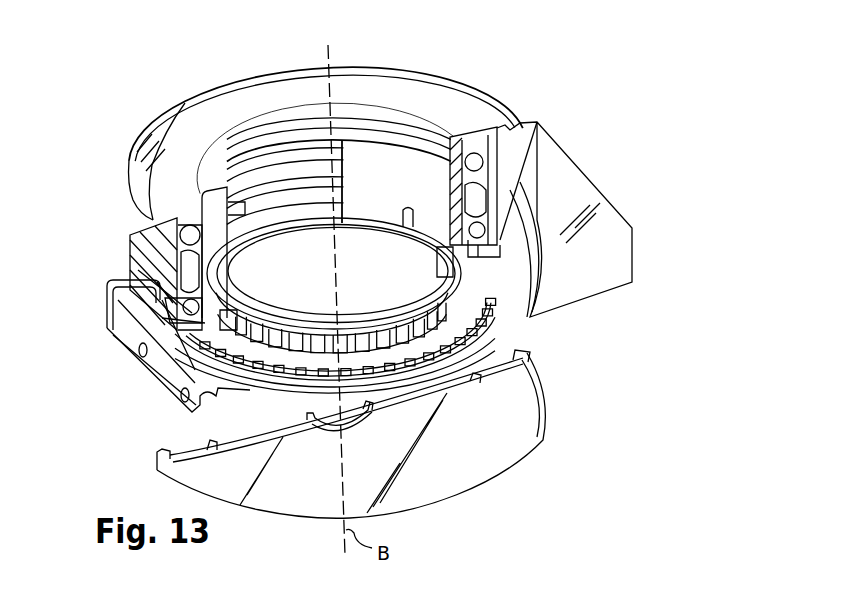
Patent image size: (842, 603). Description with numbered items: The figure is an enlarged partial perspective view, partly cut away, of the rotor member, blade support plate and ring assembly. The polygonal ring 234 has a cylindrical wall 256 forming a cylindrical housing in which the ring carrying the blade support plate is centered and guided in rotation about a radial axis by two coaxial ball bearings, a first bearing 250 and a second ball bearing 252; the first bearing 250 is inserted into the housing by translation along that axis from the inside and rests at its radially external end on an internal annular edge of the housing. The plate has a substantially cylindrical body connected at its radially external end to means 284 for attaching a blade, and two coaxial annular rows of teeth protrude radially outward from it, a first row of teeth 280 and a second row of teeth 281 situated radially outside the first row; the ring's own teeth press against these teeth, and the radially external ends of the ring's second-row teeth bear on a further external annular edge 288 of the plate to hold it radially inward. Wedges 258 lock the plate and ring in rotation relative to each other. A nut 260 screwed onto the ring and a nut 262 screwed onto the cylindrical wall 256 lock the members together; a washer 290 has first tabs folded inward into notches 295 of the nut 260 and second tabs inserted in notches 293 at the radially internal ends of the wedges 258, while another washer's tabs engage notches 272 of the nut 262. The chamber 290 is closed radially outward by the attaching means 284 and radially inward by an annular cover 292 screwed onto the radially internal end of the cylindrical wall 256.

The means for attaching a blade 284 is at (188, 107).
The further external annular edge 288 is at (237, 150).
The second row of teeth 281 is at (285, 175).
The first row of teeth 280 is at (313, 200).
The wedges 258 is at (410, 205).
The notches 293 is at (413, 207).
The first bearing 250 is at (140, 230).
The polygonal ring 234 is at (140, 280).
The cylindrical wall 256 is at (175, 290).
The ball bearing 252 is at (178, 303).
The nut 260 is at (130, 362).
The washer 290 is at (334, 273).
The notches 295 is at (300, 347).
The nut 262 is at (450, 292).
The notches 272 is at (490, 340).
The annular cover 292 is at (487, 463).